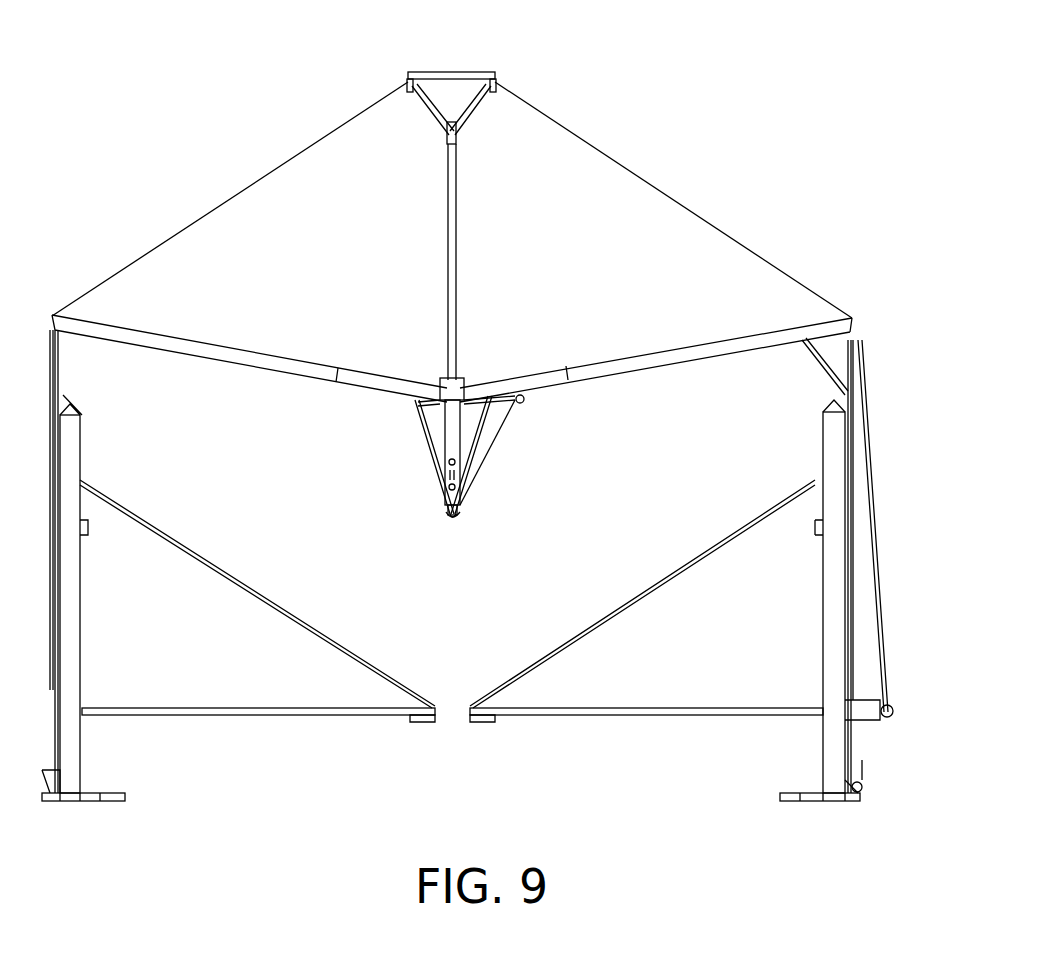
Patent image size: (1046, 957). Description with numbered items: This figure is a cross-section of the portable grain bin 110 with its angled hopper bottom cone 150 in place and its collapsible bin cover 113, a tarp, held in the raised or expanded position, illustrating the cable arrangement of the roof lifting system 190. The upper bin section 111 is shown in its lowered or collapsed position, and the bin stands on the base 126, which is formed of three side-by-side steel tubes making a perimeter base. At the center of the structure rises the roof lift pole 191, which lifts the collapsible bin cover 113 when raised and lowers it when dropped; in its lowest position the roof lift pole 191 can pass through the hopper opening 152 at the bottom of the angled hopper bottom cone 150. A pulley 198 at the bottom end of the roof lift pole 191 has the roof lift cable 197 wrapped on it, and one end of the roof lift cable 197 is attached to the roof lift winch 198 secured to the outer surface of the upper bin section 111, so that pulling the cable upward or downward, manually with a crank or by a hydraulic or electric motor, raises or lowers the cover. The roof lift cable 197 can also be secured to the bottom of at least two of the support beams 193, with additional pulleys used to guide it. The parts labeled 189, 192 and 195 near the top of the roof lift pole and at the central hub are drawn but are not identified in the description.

The portable grain bin 110 is at (862, 425).
The upper bin section 111 is at (850, 616).
The collapsible bin cover 113 is at (723, 226).
The base 126 is at (820, 805).
The angled hopper bottom cone 150 is at (622, 606).
The hopper opening 152 is at (462, 722).
The strut 189 is at (405, 100).
The roof lifting system 190 is at (490, 368).
The roof lift pole 191 is at (455, 200).
The top bracket 192 is at (500, 77).
The support beams 193 is at (212, 355).
The lower pole 195 is at (455, 442).
The roof lift cable 197 is at (500, 430).
The pulley 198 is at (456, 516).